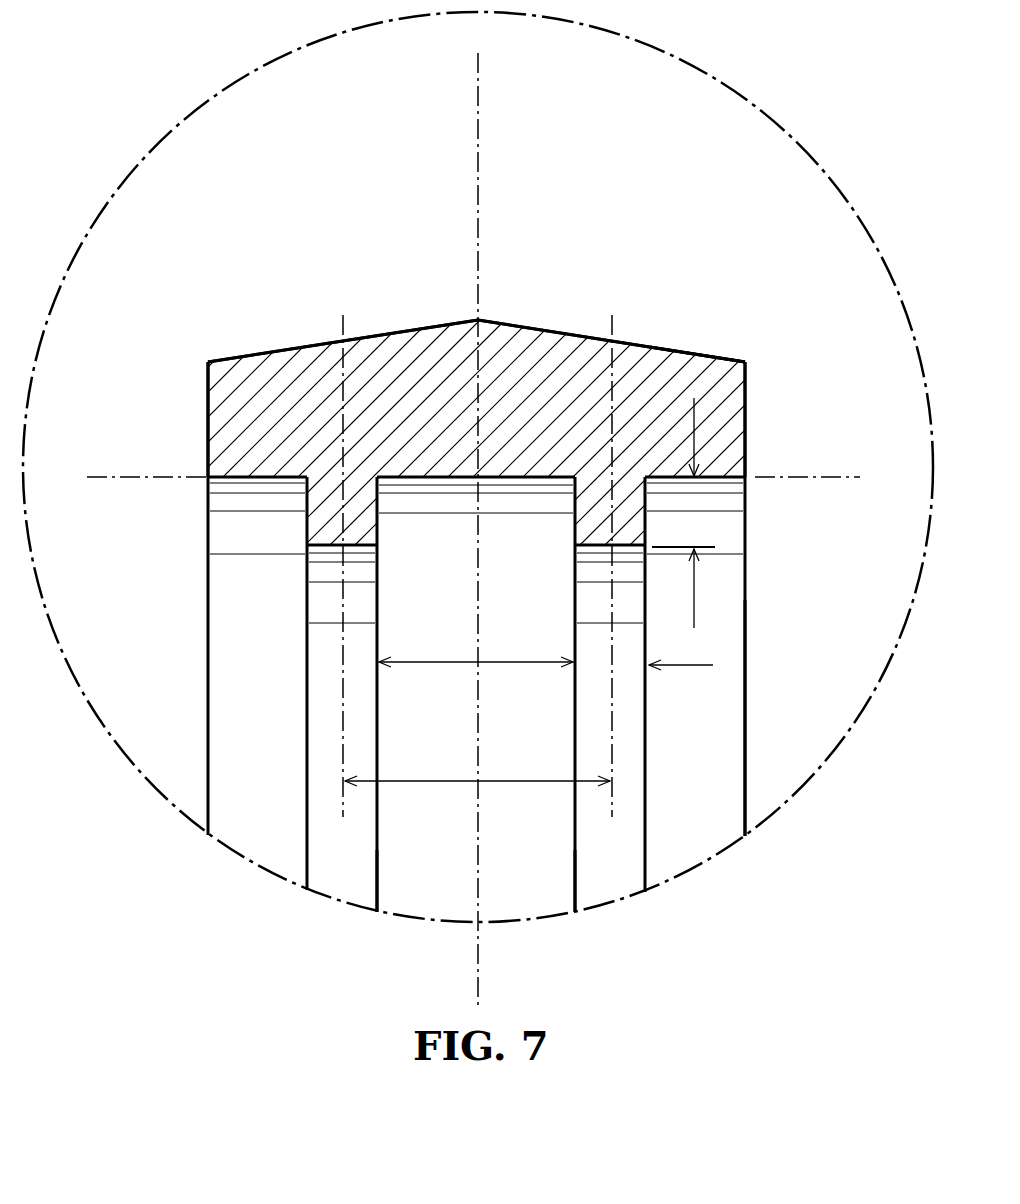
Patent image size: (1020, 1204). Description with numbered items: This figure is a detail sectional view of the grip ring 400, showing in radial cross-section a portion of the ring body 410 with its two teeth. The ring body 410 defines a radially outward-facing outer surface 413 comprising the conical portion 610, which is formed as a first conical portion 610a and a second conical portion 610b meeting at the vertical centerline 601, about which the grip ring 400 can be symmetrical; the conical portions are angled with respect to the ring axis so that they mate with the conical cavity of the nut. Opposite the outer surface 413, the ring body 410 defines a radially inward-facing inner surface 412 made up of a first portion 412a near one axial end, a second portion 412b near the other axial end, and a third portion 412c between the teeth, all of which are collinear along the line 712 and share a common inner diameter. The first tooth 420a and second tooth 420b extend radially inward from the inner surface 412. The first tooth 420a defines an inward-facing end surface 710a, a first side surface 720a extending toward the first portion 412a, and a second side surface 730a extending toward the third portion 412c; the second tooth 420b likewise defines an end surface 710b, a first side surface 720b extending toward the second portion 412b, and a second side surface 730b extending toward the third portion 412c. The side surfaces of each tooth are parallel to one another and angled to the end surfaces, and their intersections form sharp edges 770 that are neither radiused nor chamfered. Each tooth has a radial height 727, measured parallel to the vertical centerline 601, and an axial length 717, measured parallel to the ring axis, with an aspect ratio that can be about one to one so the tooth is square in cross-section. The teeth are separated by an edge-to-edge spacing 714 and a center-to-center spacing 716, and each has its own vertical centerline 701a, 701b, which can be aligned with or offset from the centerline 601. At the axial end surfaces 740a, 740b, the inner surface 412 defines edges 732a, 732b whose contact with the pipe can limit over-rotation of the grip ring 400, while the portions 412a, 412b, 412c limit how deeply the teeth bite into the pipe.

The grip ring 400 is at (665, 210).
The vertical centerline 601 is at (478, 75).
The conical portion 610 is at (611, 293).
The first conical portion 610a is at (625, 343).
The second conical portion 610b is at (397, 330).
The outer surface 413 is at (690, 348).
The ring body 410 is at (745, 412).
The first axial end surface 740a is at (755, 388).
The second axial end surface 740b is at (205, 407).
The line 712 is at (112, 480).
The first edge 732a is at (745, 480).
The second edge 732b is at (207, 477).
The first side surface of first tooth 720a is at (654, 515).
The first side surface of second tooth 720b is at (303, 503).
The second side surface of first tooth 730a is at (569, 518).
The second side surface of second tooth 730b is at (383, 518).
The sharp edges 770 is at (305, 548).
The radial height 727 is at (697, 593).
The axial length 717 is at (690, 667).
The edge-to-edge spacing 714 is at (432, 665).
The center-to-center spacing 716 is at (418, 783).
The vertical centerline of first tooth 701a is at (613, 700).
The vertical centerline of second tooth 701b is at (343, 700).
The inner surface 412 is at (815, 747).
The first portion of inner surface 412a is at (707, 832).
The second portion of inner surface 412b is at (240, 828).
The third portion of inner surface 412c is at (513, 908).
The first tooth 420a is at (698, 747).
The end surface of first tooth 710a is at (607, 883).
The second tooth 420b is at (300, 767).
The end surface of second tooth 710b is at (338, 860).